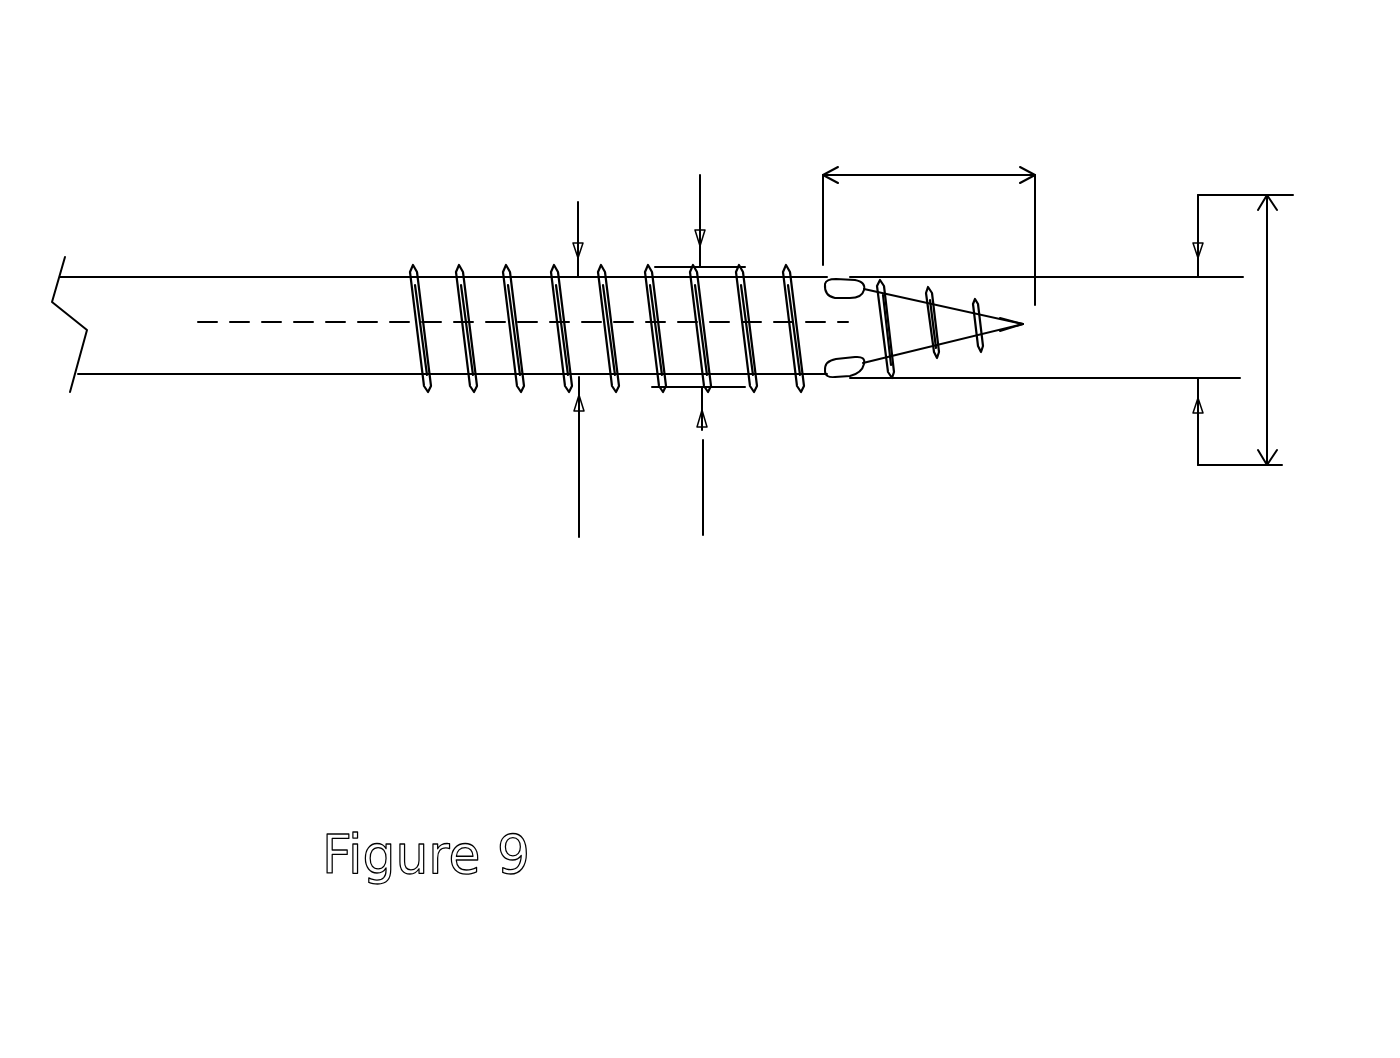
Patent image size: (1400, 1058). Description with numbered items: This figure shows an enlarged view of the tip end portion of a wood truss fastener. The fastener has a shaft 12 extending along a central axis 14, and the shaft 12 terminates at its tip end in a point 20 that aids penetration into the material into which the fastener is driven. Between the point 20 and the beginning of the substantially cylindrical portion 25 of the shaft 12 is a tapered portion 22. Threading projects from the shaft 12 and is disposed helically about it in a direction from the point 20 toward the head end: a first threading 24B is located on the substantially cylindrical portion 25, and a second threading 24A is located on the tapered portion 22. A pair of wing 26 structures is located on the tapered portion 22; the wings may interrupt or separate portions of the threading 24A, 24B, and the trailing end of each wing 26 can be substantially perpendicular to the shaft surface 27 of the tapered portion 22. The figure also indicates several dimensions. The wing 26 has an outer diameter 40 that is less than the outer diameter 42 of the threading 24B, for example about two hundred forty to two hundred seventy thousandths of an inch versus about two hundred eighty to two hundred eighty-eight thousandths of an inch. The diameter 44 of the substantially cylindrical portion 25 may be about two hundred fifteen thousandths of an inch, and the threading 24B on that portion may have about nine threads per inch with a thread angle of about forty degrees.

The shaft 12 is at (262, 279).
The central axis 14 is at (345, 323).
The point 20 is at (1025, 325).
The tapered portion 22 is at (893, 175).
The second threading 24A is at (935, 350).
The first threading 24B is at (458, 270).
The substantially cylindrical portion 25 is at (535, 280).
The wing 26 is at (838, 378).
The shaft surface of the tapered portion 27 is at (953, 348).
The outer wing diameter 40 is at (1267, 327).
The threading outer diameter 42 is at (698, 378).
The diameter of the substantially cylindrical portion 44 is at (583, 392).